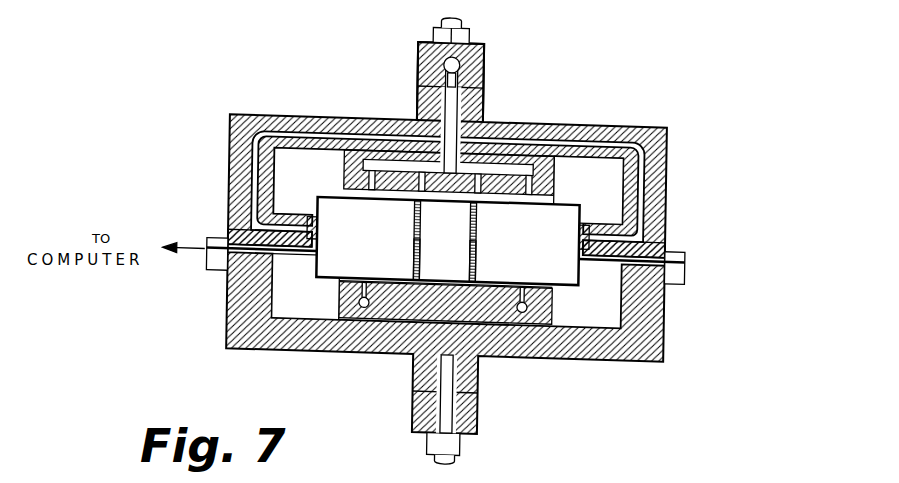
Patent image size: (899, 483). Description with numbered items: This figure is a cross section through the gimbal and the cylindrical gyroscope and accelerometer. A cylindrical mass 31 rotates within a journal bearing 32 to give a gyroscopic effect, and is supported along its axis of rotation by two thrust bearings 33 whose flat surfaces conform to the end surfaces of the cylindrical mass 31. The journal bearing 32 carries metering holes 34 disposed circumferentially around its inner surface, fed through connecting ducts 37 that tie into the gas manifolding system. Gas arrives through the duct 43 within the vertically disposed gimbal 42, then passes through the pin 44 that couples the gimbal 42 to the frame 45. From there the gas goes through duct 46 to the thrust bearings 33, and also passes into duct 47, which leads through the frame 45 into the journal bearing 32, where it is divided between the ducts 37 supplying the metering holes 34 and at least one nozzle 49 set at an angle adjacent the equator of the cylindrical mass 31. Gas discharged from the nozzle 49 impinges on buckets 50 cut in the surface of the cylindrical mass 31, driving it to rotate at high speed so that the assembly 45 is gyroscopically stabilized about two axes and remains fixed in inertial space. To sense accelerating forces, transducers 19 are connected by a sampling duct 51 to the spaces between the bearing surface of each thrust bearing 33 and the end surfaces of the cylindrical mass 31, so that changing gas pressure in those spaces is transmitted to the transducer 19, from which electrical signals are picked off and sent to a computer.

The transducer 19 is at (216, 265).
The cylindrical mass 31 is at (320, 206).
The journal bearing 32 is at (556, 174).
The thrust bearing 33 is at (289, 258).
The metering hole 34 is at (373, 191).
The connecting duct 37 is at (343, 165).
The vertically disposed gimbal 42 is at (481, 70).
The duct 43 is at (441, 62).
The pin 44 is at (447, 86).
The frame 45 is at (668, 160).
The duct 46 is at (366, 136).
The duct 47 is at (456, 146).
The nozzle 49 is at (478, 196).
The bucket 50 is at (472, 258).
The sampling duct 51 is at (243, 232).